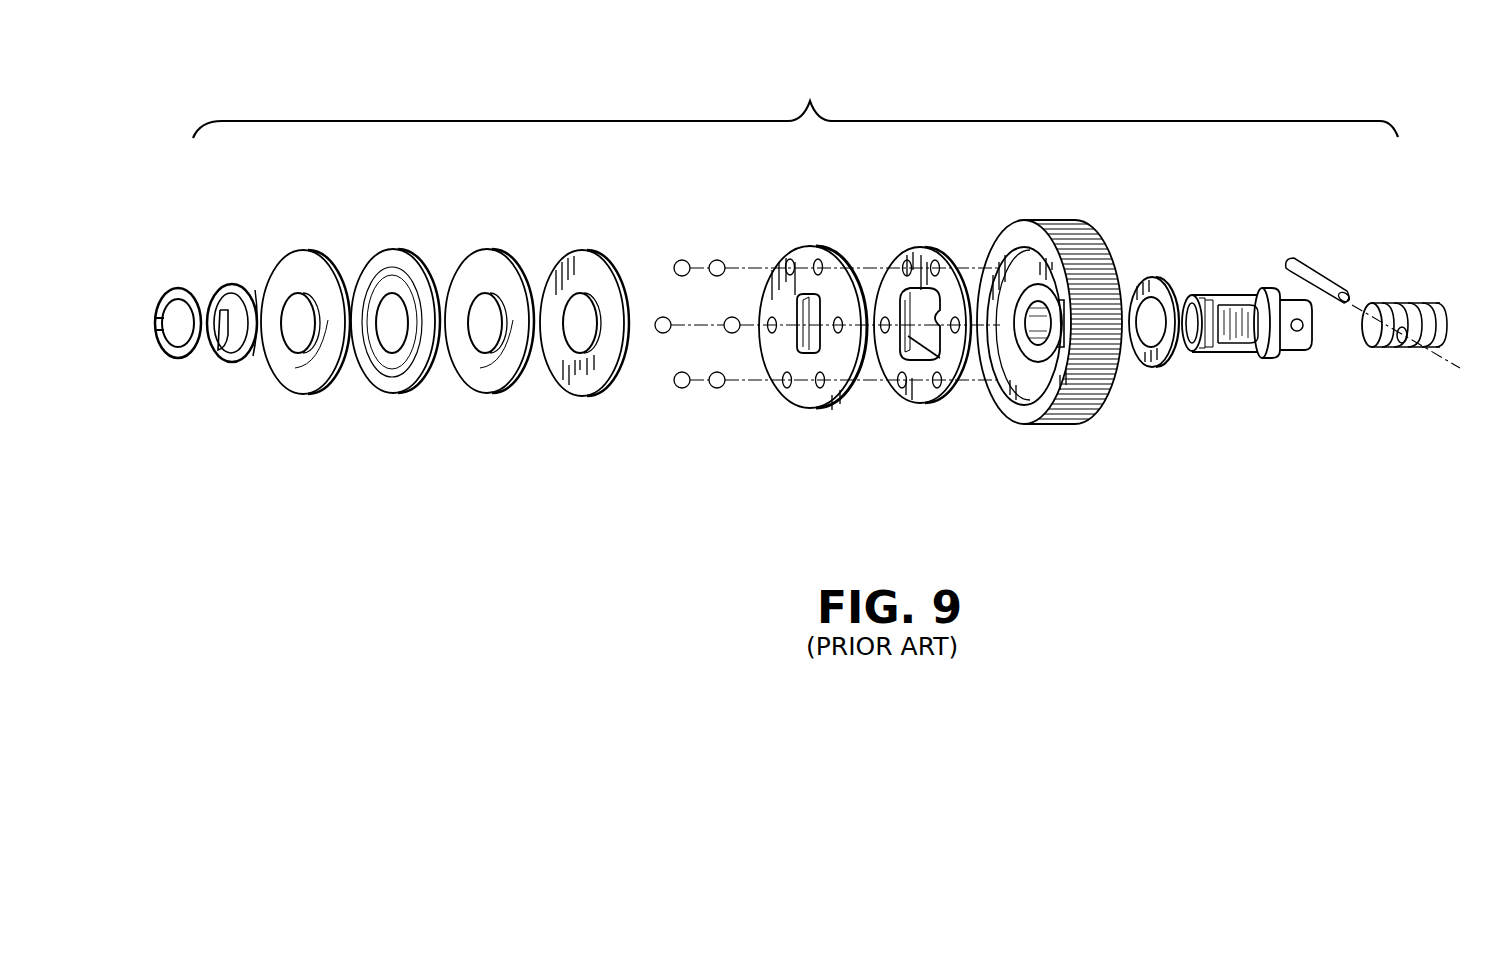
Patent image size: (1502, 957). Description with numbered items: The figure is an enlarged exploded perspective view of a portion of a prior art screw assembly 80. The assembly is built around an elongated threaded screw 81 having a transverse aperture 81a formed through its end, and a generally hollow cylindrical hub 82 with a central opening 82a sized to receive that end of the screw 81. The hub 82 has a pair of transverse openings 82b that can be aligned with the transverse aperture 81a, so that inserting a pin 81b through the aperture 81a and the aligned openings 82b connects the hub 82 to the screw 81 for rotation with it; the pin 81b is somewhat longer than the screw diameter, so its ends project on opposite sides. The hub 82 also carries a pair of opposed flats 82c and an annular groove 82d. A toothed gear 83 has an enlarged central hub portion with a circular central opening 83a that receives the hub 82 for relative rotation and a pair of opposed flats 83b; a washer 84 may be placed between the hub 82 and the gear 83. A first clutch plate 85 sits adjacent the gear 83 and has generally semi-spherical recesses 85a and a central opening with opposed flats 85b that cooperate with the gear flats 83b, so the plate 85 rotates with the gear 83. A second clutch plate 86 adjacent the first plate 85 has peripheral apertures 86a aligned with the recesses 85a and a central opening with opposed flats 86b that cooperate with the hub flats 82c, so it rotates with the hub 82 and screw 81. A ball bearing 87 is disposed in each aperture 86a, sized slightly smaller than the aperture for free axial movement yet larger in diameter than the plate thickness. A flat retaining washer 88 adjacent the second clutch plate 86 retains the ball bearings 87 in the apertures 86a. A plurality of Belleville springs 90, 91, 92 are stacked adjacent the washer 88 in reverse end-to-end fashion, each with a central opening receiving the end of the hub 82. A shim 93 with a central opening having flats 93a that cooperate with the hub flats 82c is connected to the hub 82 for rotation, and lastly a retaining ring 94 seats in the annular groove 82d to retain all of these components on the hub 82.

The prior art screw assembly 80 is at (818, 88).
The elongated threaded screw 81 is at (1432, 312).
The transverse aperture 81a is at (1402, 344).
The pin 81b is at (1317, 273).
The hollow cylindrical hub 82 is at (1213, 281).
The central opening 82a is at (1190, 313).
The transverse openings 82b is at (1298, 332).
The opposed flats 82c is at (1234, 344).
The annular groove 82d is at (1218, 353).
The toothed gear 83 is at (1093, 240).
The circular central opening 83a is at (1035, 342).
The opposed flats 83b is at (1025, 250).
The washer 84 is at (1152, 358).
The first clutch plate 85 is at (945, 250).
The recesses 85a is at (885, 317).
The opposed flats 85b is at (930, 345).
The second clutch plate 86 is at (840, 250).
The peripheral apertures 86a is at (772, 317).
The opposed flats 86b is at (808, 352).
The ball bearing 87 is at (663, 318).
The flat retaining washer 88 is at (578, 262).
The Belleville spring 90 is at (487, 262).
The Belleville spring 91 is at (398, 265).
The Belleville spring 92 is at (308, 262).
The shim 93 is at (232, 285).
The flats 93a is at (223, 348).
The retaining ring 94 is at (173, 290).